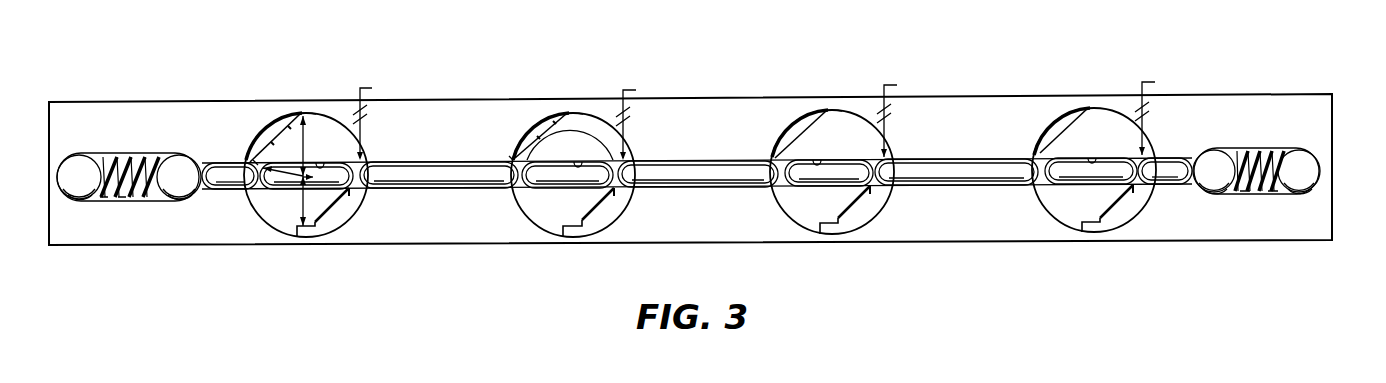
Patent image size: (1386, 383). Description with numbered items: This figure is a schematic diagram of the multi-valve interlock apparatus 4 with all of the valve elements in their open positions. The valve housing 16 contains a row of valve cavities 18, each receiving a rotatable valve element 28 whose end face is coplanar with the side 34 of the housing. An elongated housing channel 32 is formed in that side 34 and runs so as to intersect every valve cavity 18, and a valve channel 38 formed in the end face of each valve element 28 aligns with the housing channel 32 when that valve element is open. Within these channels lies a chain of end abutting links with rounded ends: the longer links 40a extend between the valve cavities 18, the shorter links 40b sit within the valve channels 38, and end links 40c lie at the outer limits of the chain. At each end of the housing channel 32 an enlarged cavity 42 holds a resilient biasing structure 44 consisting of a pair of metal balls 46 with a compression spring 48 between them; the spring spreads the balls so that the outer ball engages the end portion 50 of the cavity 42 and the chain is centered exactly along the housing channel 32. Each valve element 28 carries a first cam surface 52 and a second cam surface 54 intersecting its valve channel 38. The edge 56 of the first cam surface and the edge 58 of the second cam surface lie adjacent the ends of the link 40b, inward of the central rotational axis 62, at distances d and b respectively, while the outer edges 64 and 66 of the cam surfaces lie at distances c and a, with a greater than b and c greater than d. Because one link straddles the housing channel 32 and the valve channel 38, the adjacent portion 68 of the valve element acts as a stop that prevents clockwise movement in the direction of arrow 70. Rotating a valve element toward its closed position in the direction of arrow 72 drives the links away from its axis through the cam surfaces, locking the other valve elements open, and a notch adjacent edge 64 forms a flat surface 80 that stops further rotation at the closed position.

The sensing device assembly 4 is at (1323, 78).
The valve housing 16 is at (1328, 225).
The valve cavity 18 is at (357, 202).
The valve element 28 is at (303, 118).
The elongated housing channel 32 is at (482, 190).
The side of valve housing 34 is at (741, 137).
The valve channel 38 is at (320, 166).
The longer link 40a is at (443, 178).
The shorter link 40b is at (262, 190).
The end link 40c is at (227, 180).
The cavity 42 is at (138, 157).
The resilient biasing structure 44 is at (128, 197).
The metal ball 46 is at (77, 158).
The compression spring 48 is at (110, 196).
The end portion of cavity 50 is at (200, 160).
The first cam surface 52 is at (270, 145).
The second cam surface 54 is at (333, 210).
The edge of first cam surface 56 is at (257, 164).
The edge of second cam surface 58 is at (355, 197).
The central rotational axis 62 is at (300, 180).
The edge of first cam surface 64 is at (287, 123).
The edge of second cam surface 66 is at (320, 232).
The portion of valve element 68 is at (363, 158).
The arrow 70 is at (366, 88).
The arrow 72 is at (563, 132).
The flat surface 80 is at (567, 232).